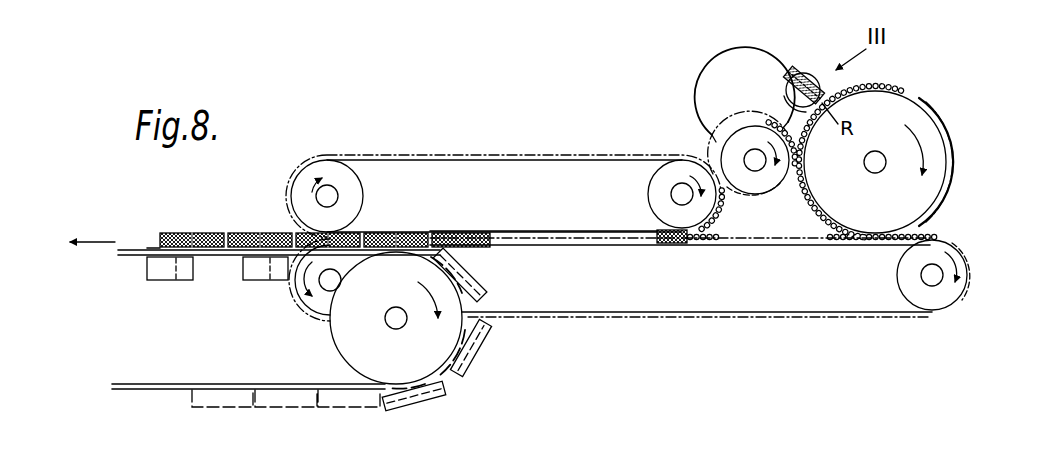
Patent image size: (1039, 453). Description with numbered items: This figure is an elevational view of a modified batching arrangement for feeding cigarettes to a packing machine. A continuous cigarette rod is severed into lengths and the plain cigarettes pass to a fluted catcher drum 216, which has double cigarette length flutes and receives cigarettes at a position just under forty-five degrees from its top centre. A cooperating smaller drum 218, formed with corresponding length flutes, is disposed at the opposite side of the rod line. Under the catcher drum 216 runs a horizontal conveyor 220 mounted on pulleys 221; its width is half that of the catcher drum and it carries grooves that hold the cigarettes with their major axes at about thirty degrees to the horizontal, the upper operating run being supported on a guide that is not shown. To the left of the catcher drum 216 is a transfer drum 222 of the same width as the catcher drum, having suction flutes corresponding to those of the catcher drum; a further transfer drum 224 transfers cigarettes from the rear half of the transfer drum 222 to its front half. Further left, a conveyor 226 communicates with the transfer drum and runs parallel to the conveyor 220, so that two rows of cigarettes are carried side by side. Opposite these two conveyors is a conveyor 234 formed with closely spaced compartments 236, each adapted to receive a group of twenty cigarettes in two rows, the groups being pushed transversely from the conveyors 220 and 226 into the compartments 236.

The catcher drum 216 is at (933, 173).
The smaller drum 218 is at (809, 74).
The horizontal conveyor 220 is at (832, 318).
The pulleys 221 is at (940, 297).
The transfer drum 222 is at (721, 158).
The transfer drum 224 is at (748, 114).
The further conveyor 226 is at (503, 158).
The conveyor 234 is at (138, 392).
The compartments 236 is at (236, 410).